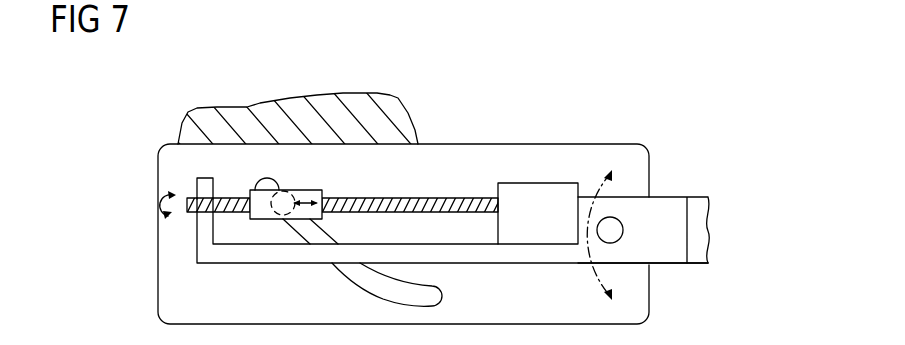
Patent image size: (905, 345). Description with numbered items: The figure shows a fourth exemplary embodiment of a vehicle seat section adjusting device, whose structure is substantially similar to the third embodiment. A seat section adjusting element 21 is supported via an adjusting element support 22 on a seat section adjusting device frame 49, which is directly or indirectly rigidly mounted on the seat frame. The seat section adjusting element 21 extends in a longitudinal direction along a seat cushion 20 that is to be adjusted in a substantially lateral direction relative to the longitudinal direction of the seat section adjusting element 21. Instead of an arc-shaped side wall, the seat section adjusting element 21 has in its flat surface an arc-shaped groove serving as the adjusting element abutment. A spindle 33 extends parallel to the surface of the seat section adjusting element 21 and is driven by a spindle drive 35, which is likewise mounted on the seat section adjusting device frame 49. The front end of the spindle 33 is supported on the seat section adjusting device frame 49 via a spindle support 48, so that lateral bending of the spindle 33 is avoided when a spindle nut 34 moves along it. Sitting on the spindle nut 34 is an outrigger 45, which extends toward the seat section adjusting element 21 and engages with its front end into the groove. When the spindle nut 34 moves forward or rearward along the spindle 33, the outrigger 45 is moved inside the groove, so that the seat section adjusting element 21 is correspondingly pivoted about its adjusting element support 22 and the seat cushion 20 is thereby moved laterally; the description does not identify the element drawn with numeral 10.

The arm 10 is at (710, 228).
The seat cushion 20 is at (300, 108).
The seat section adjusting element 21 is at (577, 144).
The adjusting element support 22 is at (616, 218).
The spindle 33 is at (452, 198).
The spindle nut 34 is at (250, 218).
The spindle drive 35 is at (519, 208).
The outrigger 45 is at (276, 204).
The spindle support 48 is at (197, 192).
The seat section adjusting device frame 49 is at (670, 267).